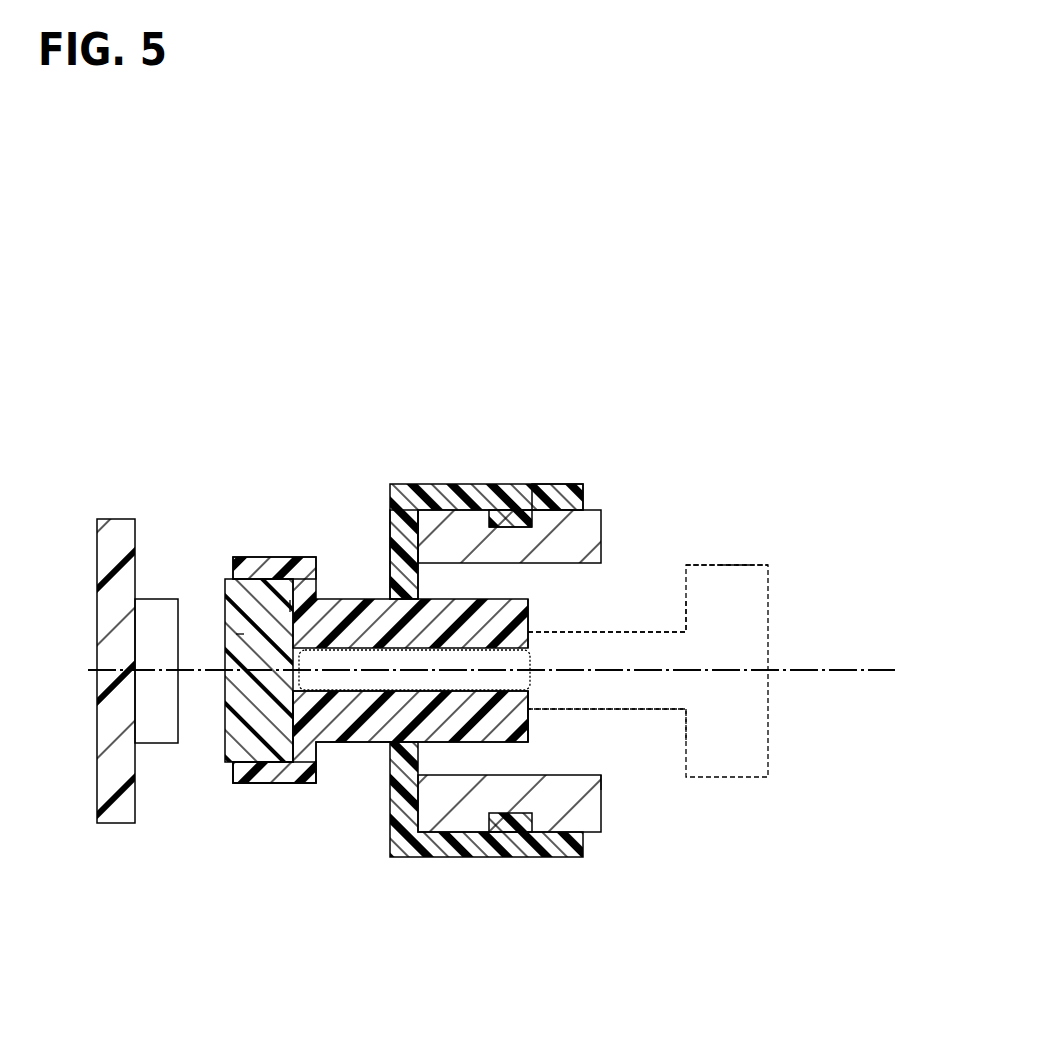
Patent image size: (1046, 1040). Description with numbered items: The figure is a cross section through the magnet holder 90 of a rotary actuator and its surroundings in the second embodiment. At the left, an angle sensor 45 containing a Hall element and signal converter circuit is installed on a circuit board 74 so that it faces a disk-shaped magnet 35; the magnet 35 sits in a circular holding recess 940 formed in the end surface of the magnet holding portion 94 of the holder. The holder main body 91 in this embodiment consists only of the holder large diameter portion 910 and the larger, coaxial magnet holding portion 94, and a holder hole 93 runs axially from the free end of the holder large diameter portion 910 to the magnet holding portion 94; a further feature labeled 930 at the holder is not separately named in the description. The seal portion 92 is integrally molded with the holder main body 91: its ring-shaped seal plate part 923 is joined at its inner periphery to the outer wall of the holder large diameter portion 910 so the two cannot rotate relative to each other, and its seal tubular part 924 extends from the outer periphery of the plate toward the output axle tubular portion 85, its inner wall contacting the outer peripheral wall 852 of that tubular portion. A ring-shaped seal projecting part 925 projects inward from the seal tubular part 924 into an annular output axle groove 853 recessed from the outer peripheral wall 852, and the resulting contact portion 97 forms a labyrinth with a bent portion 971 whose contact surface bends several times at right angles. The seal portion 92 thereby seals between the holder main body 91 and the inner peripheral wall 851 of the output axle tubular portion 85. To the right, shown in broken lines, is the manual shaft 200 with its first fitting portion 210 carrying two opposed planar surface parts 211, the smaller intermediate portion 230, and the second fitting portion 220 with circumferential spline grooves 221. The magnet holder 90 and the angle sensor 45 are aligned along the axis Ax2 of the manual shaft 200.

The circuit board 74 is at (115, 564).
The angle sensor 45 is at (150, 693).
The holding recess 940 is at (290, 606).
The magnet 35 is at (240, 634).
The magnet holding portion 94 is at (260, 776).
The first fitting portion 210 is at (348, 655).
The planar surface parts 211 is at (322, 602).
The magnet holder 90 is at (362, 745).
The holder large diameter portion 910 is at (340, 745).
The holder main body 91 is at (388, 745).
The holder hole 93 is at (506, 679).
The shaft end face 930 is at (508, 651).
The seal portion 92 is at (445, 484).
The seal plate part 923 is at (398, 538).
The seal tubular part 924 is at (553, 484).
The contact portion 97 is at (497, 530).
The bent portion 971 is at (522, 518).
The seal projecting part 925 is at (518, 527).
The output axle tubular portion 85 is at (468, 813).
The outer peripheral wall 852 is at (574, 857).
The output axle groove 853 is at (512, 832).
The inner peripheral wall 851 is at (592, 778).
The manual shaft 200 is at (767, 565).
The intermediate portion 230 is at (645, 632).
The second fitting portion 220 is at (703, 565).
The spline grooves 221 is at (733, 565).
The axis of the manual shaft Ax2 is at (857, 678).